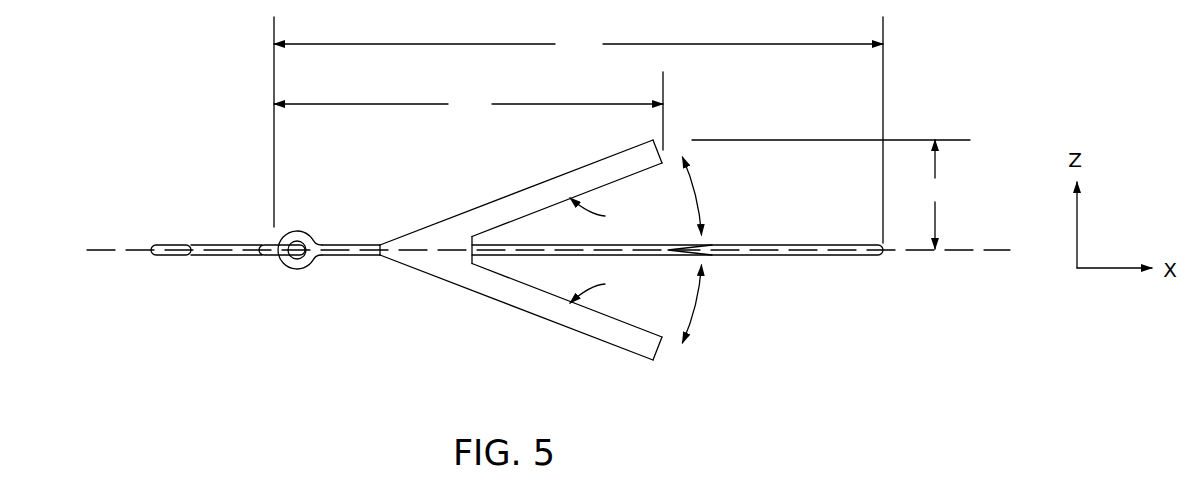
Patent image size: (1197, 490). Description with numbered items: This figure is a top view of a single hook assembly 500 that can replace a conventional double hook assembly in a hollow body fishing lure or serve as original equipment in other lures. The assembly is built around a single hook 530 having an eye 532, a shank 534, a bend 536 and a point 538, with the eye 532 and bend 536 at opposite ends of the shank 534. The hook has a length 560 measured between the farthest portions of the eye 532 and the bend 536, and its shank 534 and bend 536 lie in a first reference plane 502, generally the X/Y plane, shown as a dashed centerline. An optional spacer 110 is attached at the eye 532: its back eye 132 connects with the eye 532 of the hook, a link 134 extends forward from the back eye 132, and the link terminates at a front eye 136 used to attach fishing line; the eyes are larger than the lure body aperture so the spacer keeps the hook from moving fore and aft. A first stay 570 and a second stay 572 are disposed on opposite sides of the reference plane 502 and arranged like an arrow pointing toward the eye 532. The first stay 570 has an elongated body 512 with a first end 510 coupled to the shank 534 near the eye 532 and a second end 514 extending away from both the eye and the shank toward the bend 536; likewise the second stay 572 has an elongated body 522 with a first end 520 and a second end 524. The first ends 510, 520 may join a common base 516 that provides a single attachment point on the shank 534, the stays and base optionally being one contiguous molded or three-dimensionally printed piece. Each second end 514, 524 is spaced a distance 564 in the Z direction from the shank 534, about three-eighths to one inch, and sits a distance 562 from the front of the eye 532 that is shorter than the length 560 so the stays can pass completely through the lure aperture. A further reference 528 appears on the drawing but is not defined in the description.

The single hook assembly 500 is at (132, 102).
The first reference plane 502 is at (102, 253).
The spacer 110 is at (198, 283).
The front eye 136 is at (163, 244).
The link 134 is at (213, 244).
The back eye 132 is at (270, 244).
The eye 532 is at (290, 270).
The shank 534 is at (340, 246).
The hook 530 is at (355, 258).
The first end 510 is at (440, 232).
The elongated body 512 is at (535, 190).
The second end 514 is at (652, 141).
The base 516 is at (400, 258).
The first end 520 is at (440, 262).
The elongated body 522 is at (528, 300).
The second end 524 is at (653, 347).
The arm deflection angle 528 is at (698, 192).
The bend 536 is at (883, 256).
The point 538 is at (668, 253).
The length 560 is at (578, 130).
The distance 562 is at (468, 111).
The distance 564 is at (831, 194).
The first stay 570 is at (608, 214).
The second stay 572 is at (608, 288).